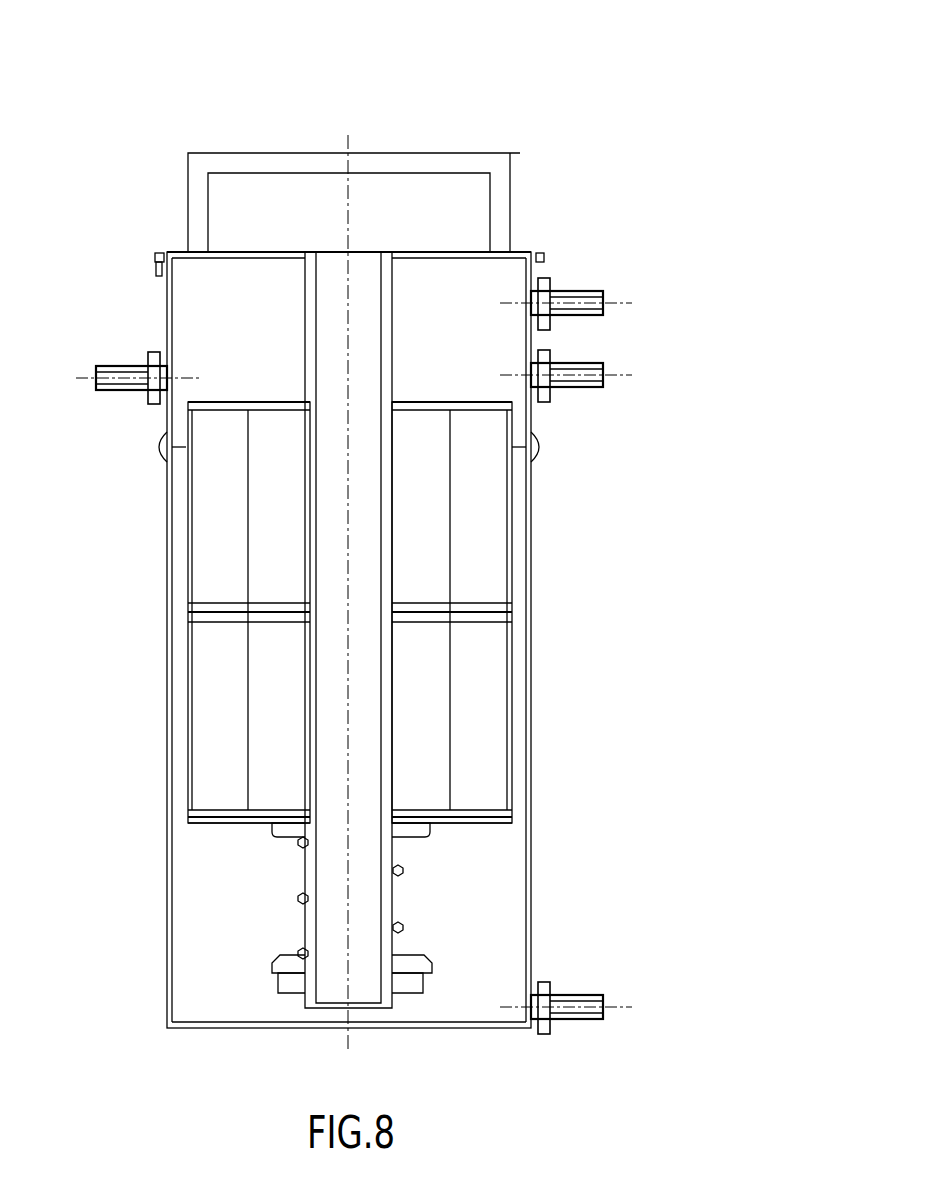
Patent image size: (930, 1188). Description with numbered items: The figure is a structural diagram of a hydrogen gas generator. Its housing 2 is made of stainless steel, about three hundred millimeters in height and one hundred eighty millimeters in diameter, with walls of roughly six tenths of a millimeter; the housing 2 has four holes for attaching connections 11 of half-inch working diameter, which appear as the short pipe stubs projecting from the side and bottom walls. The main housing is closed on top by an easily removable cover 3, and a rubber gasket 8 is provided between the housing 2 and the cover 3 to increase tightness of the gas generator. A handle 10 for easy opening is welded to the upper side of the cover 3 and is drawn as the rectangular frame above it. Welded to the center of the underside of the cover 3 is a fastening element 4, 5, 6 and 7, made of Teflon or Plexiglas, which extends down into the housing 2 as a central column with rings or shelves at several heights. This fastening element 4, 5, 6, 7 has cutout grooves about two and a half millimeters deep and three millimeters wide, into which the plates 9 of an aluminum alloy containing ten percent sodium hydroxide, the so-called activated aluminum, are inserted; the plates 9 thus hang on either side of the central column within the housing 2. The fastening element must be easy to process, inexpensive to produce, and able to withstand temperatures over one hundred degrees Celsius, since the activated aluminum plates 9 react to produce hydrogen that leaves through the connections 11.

The housing 2 is at (170, 742).
The cover 3 is at (177, 253).
The fastening element 4 is at (388, 337).
The fastening element 5 is at (232, 402).
The fastening element 6 is at (198, 613).
The fastening element 7 is at (217, 822).
The rubber gasket 8 is at (158, 257).
The activated aluminum plates 9 is at (217, 508).
The handle 10 is at (200, 178).
The connections 11 is at (142, 380).